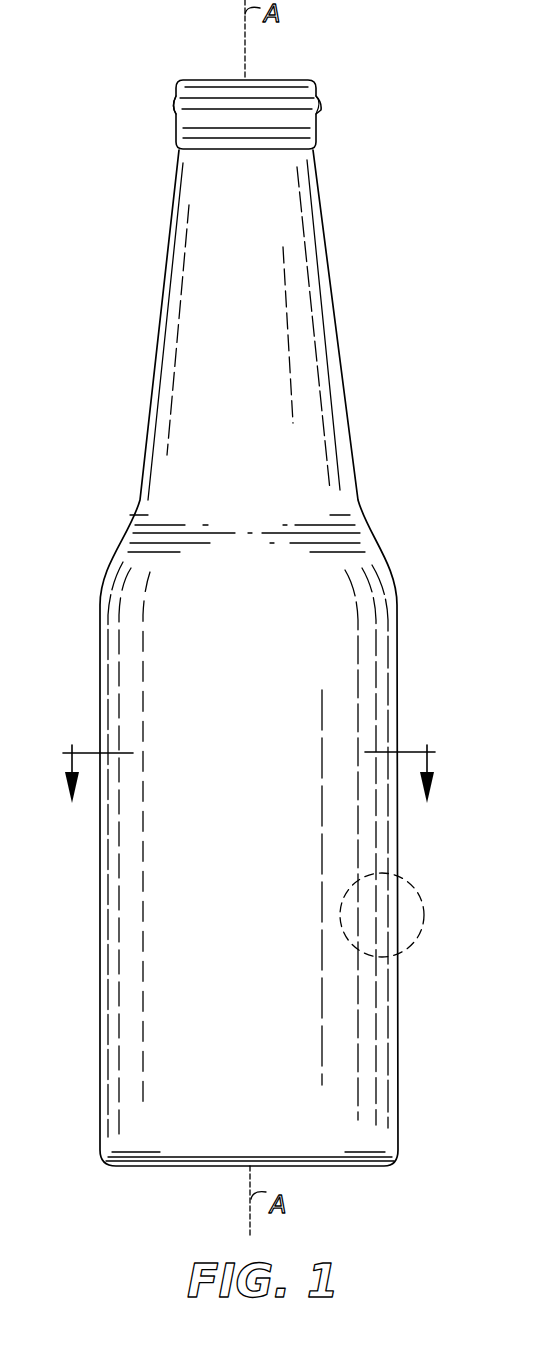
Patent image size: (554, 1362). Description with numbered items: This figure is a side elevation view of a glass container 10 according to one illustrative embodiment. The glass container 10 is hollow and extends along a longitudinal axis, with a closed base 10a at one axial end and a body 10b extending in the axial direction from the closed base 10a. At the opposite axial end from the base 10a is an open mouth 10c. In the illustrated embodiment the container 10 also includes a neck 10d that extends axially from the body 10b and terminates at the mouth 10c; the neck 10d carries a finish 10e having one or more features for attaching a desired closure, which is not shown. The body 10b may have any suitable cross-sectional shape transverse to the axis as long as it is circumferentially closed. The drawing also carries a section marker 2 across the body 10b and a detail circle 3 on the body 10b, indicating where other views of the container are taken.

The glass container 10 is at (102, 243).
The closed base 10a is at (348, 1167).
The body 10b is at (398, 1066).
The open mouth 10c is at (298, 80).
The neck 10d is at (338, 360).
The finish 10e is at (178, 110).
The section line 2- 2 is at (250, 774).
The detail circle 3 is at (410, 884).